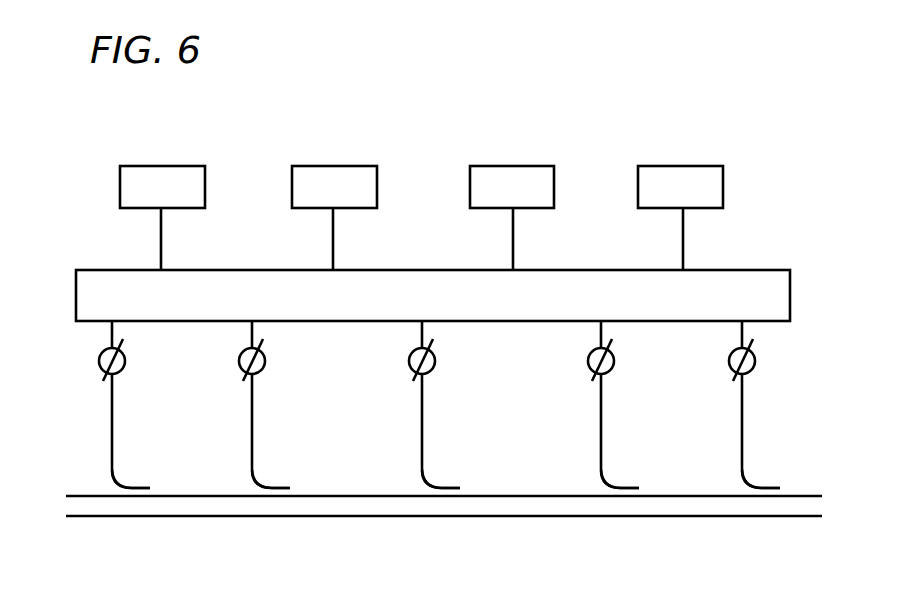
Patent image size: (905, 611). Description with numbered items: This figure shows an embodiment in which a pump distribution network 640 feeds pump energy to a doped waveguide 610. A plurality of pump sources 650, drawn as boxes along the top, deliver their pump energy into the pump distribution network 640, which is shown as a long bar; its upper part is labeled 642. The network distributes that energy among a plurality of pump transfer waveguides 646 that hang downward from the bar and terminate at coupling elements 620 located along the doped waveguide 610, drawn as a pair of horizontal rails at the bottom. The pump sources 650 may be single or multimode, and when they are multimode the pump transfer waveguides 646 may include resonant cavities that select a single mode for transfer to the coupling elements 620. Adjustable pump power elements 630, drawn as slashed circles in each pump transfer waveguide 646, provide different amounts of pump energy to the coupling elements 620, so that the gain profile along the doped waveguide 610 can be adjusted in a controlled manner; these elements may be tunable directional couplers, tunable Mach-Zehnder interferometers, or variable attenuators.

The doped waveguide 610 is at (604, 516).
The coupling elements 620 is at (463, 404).
The adjustable pump power elements 630 is at (463, 404).
The pump distribution network 640 is at (401, 293).
The controller bus 642 is at (780, 270).
The pump transfer waveguides 646 is at (463, 404).
The pump sources 650 is at (424, 196).